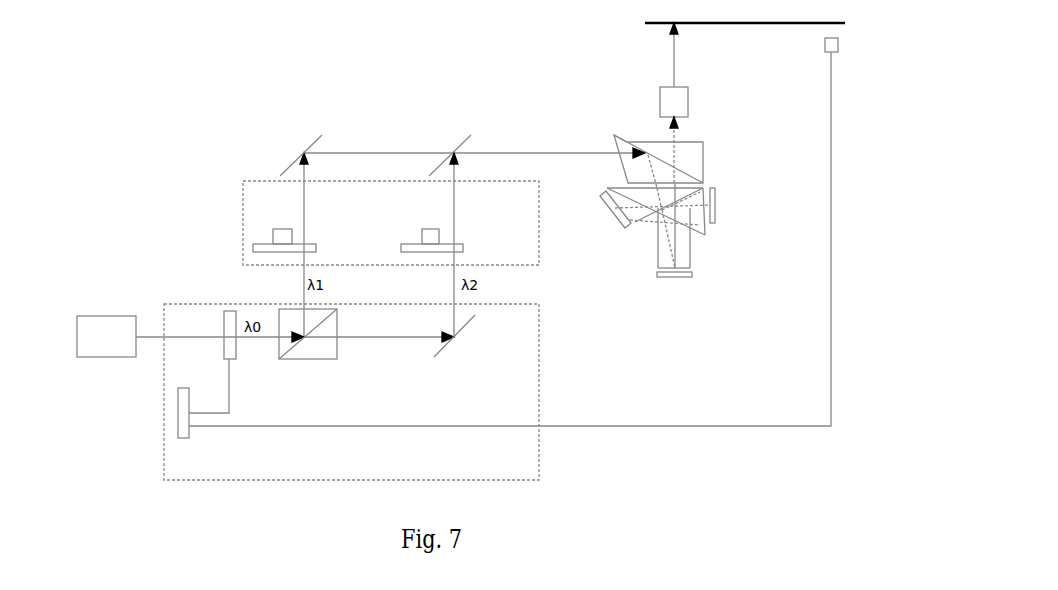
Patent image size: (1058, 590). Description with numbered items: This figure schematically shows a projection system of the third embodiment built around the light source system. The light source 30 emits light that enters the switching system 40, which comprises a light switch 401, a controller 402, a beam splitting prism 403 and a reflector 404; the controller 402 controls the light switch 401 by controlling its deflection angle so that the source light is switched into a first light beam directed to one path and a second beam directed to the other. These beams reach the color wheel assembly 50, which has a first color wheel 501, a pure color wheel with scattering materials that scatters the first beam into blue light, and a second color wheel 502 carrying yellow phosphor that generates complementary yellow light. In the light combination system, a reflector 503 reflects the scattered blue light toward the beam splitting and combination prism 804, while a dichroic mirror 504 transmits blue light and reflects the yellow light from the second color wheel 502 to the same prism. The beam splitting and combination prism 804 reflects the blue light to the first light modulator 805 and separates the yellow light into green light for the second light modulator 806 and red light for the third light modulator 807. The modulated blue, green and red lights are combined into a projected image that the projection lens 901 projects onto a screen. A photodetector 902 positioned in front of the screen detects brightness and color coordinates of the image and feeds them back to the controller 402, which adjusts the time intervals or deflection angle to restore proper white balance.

The light source 30 is at (107, 318).
The switching system 40 is at (164, 304).
The color wheel assembly 50 is at (253, 183).
The light switch 401 is at (237, 357).
The controller 402 is at (186, 428).
The beam splitting prism 403 is at (312, 354).
The reflector 404 is at (449, 342).
The first color wheel 501 is at (313, 247).
The second color wheel 502 is at (462, 247).
The reflector 503 is at (320, 137).
The dichroic mirror 504 is at (468, 137).
The beam splitting and combination prism 804 is at (705, 181).
The first light modulator 805 is at (628, 225).
The second light modulator 806 is at (683, 279).
The third light modulator 807 is at (716, 218).
The projection lens 901 is at (688, 96).
The photodetector 902 is at (826, 46).